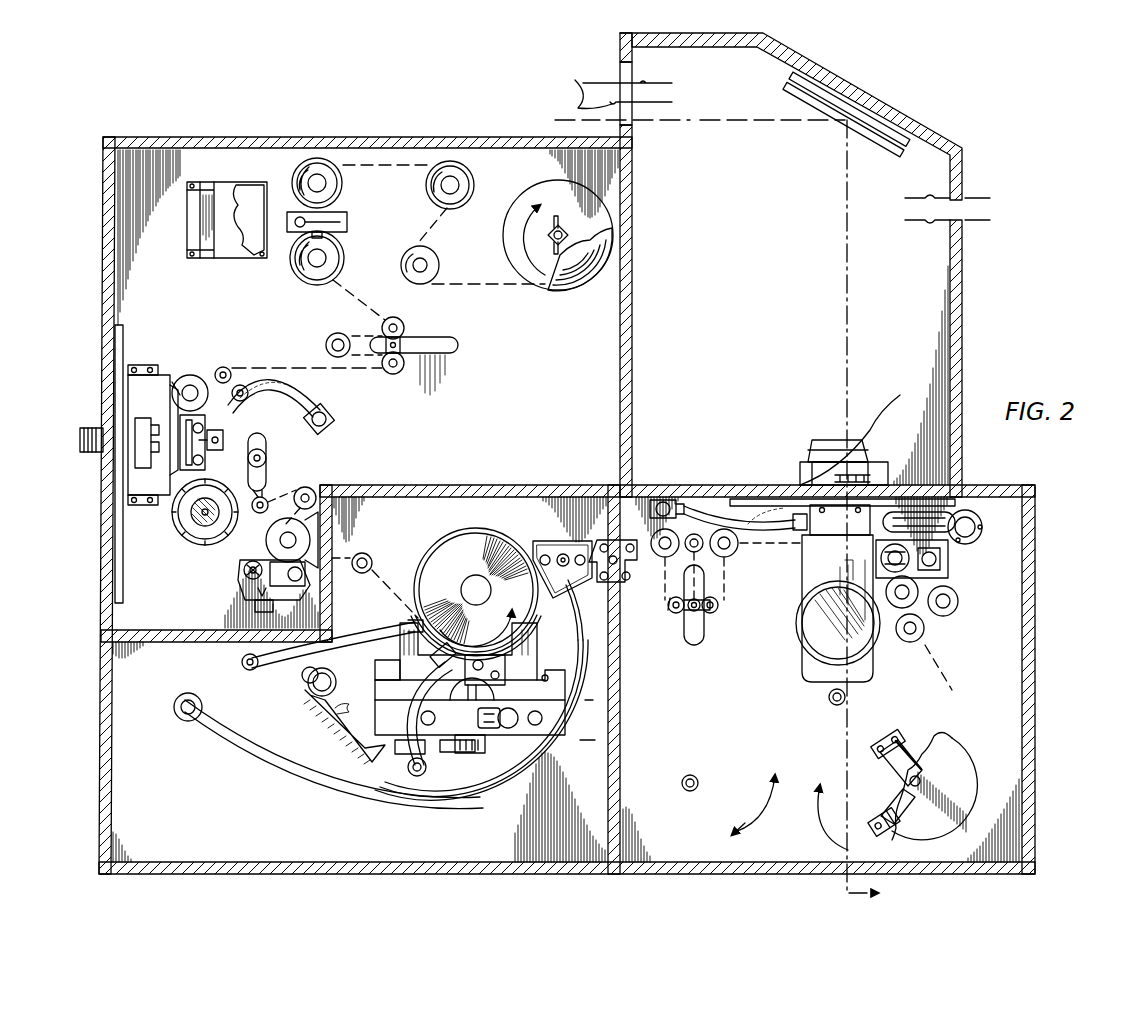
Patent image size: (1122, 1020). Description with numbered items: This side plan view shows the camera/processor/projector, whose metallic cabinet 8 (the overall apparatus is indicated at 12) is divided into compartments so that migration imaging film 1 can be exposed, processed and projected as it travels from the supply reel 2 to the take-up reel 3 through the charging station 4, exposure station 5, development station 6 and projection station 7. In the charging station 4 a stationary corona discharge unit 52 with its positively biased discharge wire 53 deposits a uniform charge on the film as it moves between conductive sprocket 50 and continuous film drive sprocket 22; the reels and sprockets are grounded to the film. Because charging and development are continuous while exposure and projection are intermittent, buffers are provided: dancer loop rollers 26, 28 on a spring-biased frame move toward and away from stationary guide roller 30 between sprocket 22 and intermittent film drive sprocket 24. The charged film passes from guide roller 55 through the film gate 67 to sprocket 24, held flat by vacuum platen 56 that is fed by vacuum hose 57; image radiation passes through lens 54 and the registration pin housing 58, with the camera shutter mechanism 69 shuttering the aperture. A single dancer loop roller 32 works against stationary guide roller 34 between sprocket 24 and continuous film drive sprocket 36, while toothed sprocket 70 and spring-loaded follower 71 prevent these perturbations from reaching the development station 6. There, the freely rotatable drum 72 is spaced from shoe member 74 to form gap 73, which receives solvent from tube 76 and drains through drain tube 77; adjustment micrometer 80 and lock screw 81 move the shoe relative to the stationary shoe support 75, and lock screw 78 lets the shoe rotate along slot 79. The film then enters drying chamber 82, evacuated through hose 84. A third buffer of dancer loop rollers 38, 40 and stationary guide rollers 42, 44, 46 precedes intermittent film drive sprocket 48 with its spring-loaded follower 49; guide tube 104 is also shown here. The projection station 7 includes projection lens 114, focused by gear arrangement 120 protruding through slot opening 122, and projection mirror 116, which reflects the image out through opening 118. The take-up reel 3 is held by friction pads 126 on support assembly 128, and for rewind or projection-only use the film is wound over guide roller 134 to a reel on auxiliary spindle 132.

The film 1 is at (462, 290).
The supply reel 2 is at (535, 210).
The take-up reel 3 is at (960, 755).
The charging station 4 is at (268, 148).
The exposure station 5 is at (192, 372).
The development station 6 is at (435, 538).
The projection station 7 is at (758, 470).
The cabinet 8 is at (103, 193).
The housing 12 is at (102, 128).
The continuous film drive sprocket 22 is at (336, 262).
The intermittent film drive sprocket 24 is at (186, 530).
The dancer loop roller 26 is at (402, 323).
The dancer loop roller 28 is at (390, 375).
The guide roller 30 is at (328, 340).
The dancer loop roller 32 is at (280, 472).
The stationary guide roller 34 is at (283, 492).
The continuous film drive sprocket 36 is at (575, 555).
The dancer loop roller 38 is at (668, 612).
The dancer loop roller 40 is at (718, 612).
The stationary guide roller 42 is at (658, 516).
The stationary guide roller 44 is at (665, 557).
The stationary guide roller 46 is at (730, 558).
The intermittent film drive sprocket 48 is at (940, 570).
The spring-loaded follower 49 is at (956, 548).
The conductive sprocket 50 is at (338, 178).
The corona discharge unit 52 is at (228, 252).
The discharge wire 53 is at (243, 200).
The lens 54 is at (80, 450).
The guide roller 55 is at (215, 375).
The vacuum platen 56 is at (210, 445).
The vacuum hose 57 is at (275, 385).
The registration pin housing 58 is at (150, 492).
The film gate 67 is at (170, 385).
The camera shutter mechanism 69 is at (118, 405).
The toothed sprocket 70 is at (270, 538).
The spring-loaded follower 71 is at (245, 580).
The drum 72 is at (455, 560).
The gap 73 is at (375, 585).
The shoe member 74 is at (510, 667).
The stationary shoe support 75 is at (545, 738).
The tube 76 is at (255, 680).
The drain tube 77 is at (400, 742).
The lock screw 78 is at (305, 688).
The slot 79 is at (312, 728).
The adjustment micrometer 80 is at (438, 745).
The lock screw 81 is at (478, 716).
The drying chamber 82 is at (540, 540).
The hose 84 is at (250, 765).
The guide tube 104 is at (780, 530).
The projection lens 114 is at (803, 455).
The projection mirror 116 is at (875, 140).
The opening 118 is at (620, 70).
The gear arrangement 120 is at (868, 452).
The slot opening 122 is at (888, 470).
The friction pads 126 is at (886, 740).
The support assembly 128 is at (896, 762).
The auxiliary spindle 132 is at (684, 782).
The guide roller 134 is at (828, 698).